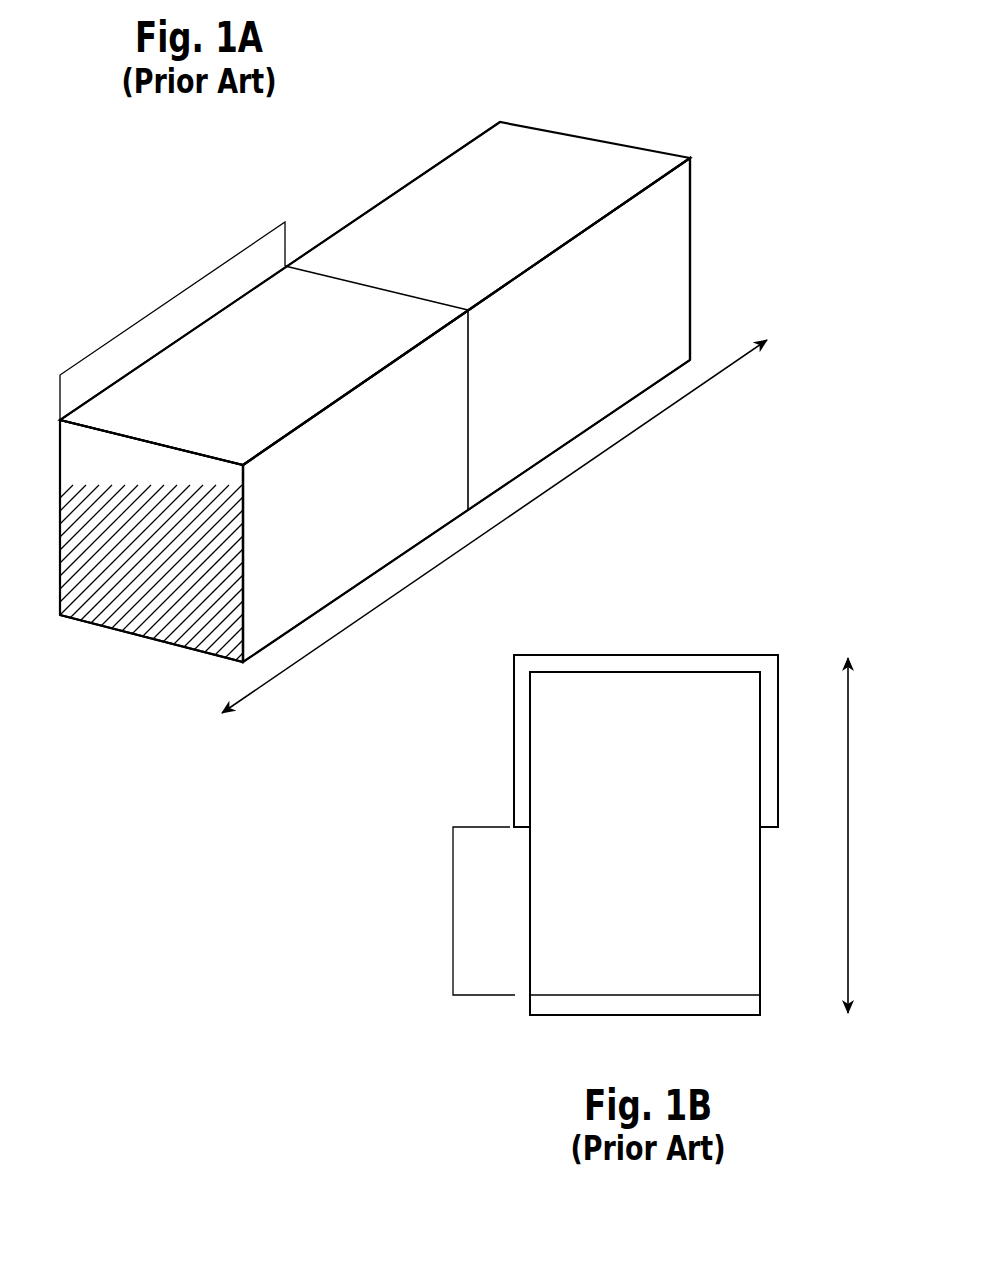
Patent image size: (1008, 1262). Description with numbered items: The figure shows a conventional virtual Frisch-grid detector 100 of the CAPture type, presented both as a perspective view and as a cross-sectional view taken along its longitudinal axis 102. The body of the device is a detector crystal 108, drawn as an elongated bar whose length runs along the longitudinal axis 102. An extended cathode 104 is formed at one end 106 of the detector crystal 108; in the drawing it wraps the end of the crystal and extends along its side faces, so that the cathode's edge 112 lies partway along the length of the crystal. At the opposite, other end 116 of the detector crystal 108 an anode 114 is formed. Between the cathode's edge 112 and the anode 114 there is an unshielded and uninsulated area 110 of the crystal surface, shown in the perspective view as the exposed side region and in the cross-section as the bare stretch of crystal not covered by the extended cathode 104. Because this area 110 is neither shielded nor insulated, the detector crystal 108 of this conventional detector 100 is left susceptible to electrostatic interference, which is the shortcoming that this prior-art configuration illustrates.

In FIG. 1A, the virtual Frisch-grid detector 100 is at (247, 188).
In FIG. 1B, the virtual Frisch-grid detector 100 is at (736, 574).
In FIG. 1A, the longitudinal axis 102 is at (498, 527).
In FIG. 1B, the longitudinal axis 102 is at (850, 800).
In FIG. 1A, the extended cathode 104 is at (466, 311).
In FIG. 1B, the extended cathode 104 is at (625, 662).
In FIG. 1A, the one end of the detector crystal 106 is at (710, 228).
In FIG. 1B, the one end of the detector crystal 106 is at (745, 653).
In FIG. 1A, the detector crystal 108 is at (375, 392).
In FIG. 1B, the detector crystal 108 is at (645, 843).
In FIG. 1A, the unshielded and uninsulated area 110 is at (178, 293).
In FIG. 1B, the unshielded and uninsulated area 110 is at (453, 910).
In FIG. 1A, the cathode's edge 112 is at (446, 302).
In FIG. 1B, the cathode's edge 112 is at (518, 832).
In FIG. 1A, the anode 114 is at (103, 592).
In FIG. 1B, the anode 114 is at (556, 1005).
In FIG. 1A, the other end of the detector crystal 116 is at (163, 672).
In FIG. 1B, the other end of the detector crystal 116 is at (720, 1018).